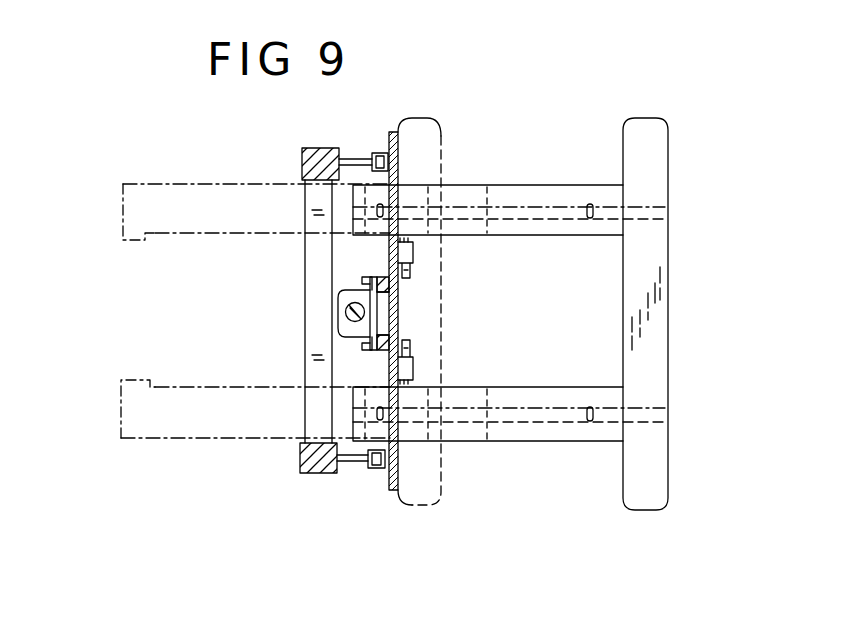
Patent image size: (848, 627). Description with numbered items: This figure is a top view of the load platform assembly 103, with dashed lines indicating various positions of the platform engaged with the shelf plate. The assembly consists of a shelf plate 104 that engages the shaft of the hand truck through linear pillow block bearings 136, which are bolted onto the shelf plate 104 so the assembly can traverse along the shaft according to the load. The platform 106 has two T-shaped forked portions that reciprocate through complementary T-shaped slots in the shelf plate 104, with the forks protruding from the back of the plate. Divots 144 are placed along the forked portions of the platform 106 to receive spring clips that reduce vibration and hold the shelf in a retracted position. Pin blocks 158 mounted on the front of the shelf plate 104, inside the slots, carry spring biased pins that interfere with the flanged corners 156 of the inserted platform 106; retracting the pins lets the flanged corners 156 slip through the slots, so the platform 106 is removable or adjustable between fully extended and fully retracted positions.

The load platform assembly 103 is at (438, 523).
The shelf plate 104 is at (392, 496).
The platform 106 is at (672, 456).
The linear pillow block bearing 136 is at (342, 339).
The divots 144 is at (589, 204).
The flanged corners 156 is at (138, 244).
The pin blocks 158 is at (420, 252).